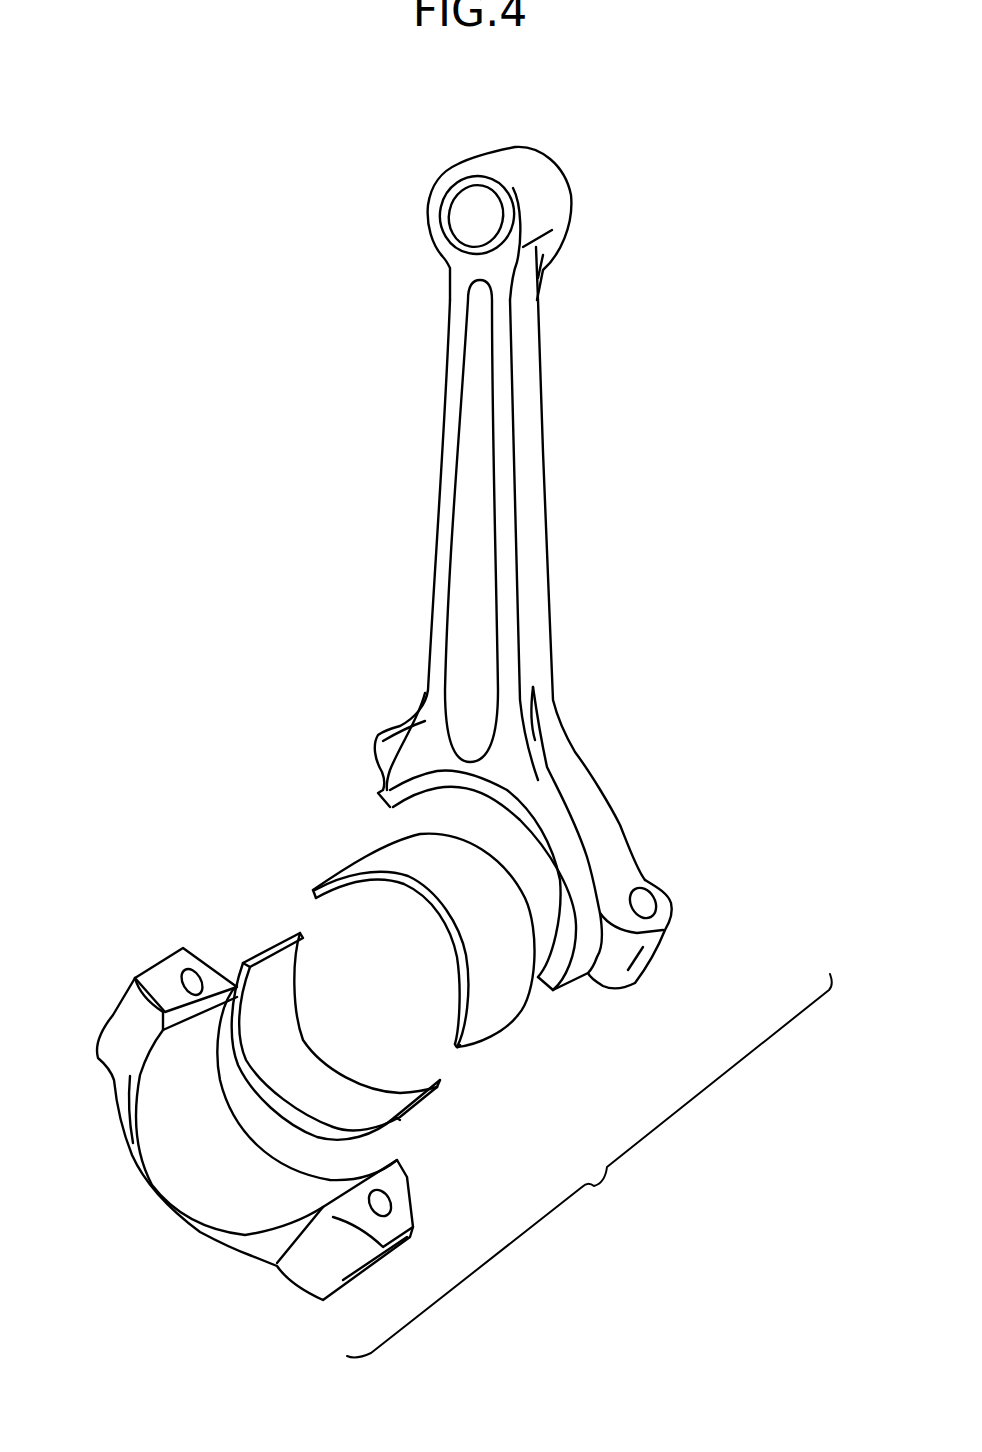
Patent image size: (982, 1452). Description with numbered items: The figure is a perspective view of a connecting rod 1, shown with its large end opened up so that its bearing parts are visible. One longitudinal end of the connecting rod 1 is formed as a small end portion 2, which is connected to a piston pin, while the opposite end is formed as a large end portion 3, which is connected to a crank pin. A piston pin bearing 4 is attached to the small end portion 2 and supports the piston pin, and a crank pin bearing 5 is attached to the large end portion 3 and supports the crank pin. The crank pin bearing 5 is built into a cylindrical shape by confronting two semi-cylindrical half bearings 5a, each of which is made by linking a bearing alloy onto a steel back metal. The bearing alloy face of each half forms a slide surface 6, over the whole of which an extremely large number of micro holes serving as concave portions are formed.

The connecting rod 1 is at (471, 549).
The small end portion 2 is at (490, 206).
The large end portion 3 is at (645, 995).
The piston pin bearing 4 is at (463, 222).
The crank pin bearing 5 is at (307, 873).
The semi-cylindrical half bearing 5a is at (492, 1035).
The slide surface 6 is at (262, 980).